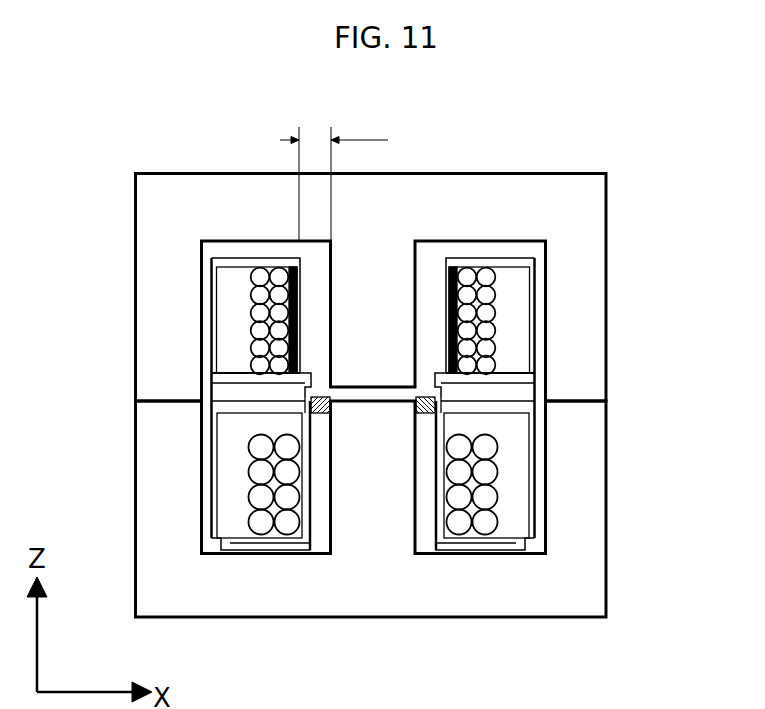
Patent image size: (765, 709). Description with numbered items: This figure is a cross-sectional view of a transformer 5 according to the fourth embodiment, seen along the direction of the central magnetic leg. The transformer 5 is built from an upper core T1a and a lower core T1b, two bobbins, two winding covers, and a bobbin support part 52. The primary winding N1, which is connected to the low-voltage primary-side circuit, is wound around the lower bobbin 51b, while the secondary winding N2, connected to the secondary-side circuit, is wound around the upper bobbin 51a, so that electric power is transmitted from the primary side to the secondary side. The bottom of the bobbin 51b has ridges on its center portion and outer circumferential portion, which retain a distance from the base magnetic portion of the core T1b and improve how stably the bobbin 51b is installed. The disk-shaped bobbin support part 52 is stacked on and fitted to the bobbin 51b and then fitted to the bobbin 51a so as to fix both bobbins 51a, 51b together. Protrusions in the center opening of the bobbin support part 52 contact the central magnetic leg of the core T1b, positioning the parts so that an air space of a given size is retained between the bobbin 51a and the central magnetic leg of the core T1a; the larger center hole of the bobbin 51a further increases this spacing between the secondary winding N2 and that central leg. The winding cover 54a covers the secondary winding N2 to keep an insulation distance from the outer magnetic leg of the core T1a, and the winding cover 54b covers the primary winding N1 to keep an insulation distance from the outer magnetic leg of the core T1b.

The transformer 5 is at (111, 112).
The core T1a is at (583, 194).
The core T1b is at (583, 592).
The bobbin 51a is at (460, 258).
The bobbin 51b is at (488, 543).
The bobbin support part 52 is at (228, 391).
The winding cover 54a is at (211, 326).
The winding cover 54b is at (208, 485).
The primary winding N1 is at (498, 496).
The secondary winding N2 is at (497, 332).